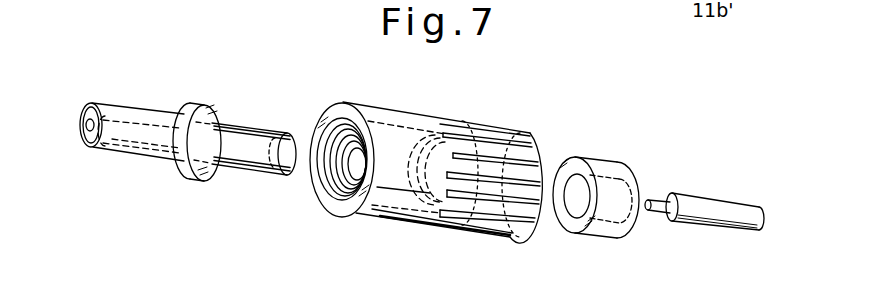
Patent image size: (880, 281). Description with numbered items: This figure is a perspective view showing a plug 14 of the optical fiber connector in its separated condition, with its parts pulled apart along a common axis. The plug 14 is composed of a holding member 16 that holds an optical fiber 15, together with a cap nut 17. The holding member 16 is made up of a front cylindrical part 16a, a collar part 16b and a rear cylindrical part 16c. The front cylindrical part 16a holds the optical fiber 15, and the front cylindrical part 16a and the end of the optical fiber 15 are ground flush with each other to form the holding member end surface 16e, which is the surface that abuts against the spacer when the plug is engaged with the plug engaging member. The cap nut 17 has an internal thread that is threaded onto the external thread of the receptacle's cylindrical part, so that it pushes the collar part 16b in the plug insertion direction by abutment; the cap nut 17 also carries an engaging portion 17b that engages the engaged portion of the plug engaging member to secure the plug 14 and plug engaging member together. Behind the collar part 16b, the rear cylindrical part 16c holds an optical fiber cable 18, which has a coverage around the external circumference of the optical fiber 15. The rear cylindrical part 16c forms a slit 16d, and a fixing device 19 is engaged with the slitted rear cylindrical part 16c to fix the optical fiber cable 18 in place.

The plug 14 is at (411, 169).
The optical fiber 15 is at (655, 190).
The holding member 16 is at (174, 143).
The front cylindrical part 16a is at (125, 157).
The collar part 16b is at (200, 182).
The rear cylindrical part 16c is at (262, 158).
The slit 16d is at (257, 132).
The holding member end surface 16e is at (78, 138).
The cap nut 17 is at (380, 212).
The engaging portion 17b is at (317, 188).
The optical fiber cable 18 is at (710, 197).
The fixing device 19 is at (585, 155).